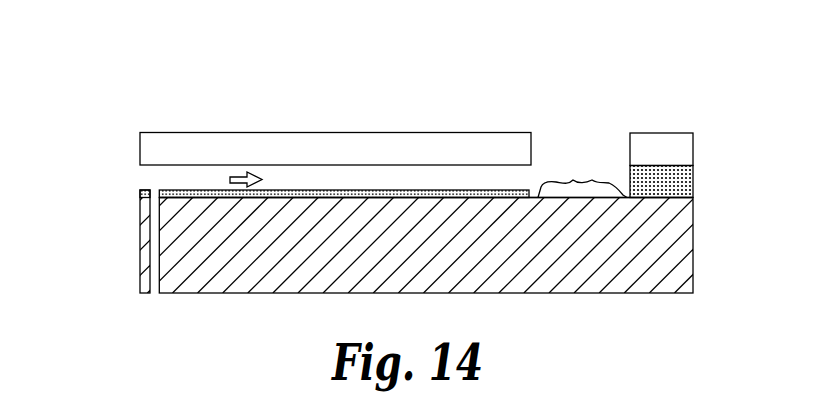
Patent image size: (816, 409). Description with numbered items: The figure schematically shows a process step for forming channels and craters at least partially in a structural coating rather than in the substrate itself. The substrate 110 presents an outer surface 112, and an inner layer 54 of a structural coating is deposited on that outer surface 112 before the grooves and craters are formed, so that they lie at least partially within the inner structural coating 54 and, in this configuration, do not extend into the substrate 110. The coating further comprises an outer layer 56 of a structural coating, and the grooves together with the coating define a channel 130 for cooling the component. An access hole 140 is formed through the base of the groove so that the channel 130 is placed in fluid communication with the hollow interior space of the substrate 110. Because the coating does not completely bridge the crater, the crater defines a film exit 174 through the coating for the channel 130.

The film exit 174 is at (592, 105).
The outer layer of structural coating 56 is at (678, 145).
The inner layer of structural coating 54 is at (683, 183).
The outer surface of substrate 112 is at (671, 199).
The substrate 110 is at (672, 283).
The channel 130 is at (322, 182).
The access hole 140 is at (150, 270).